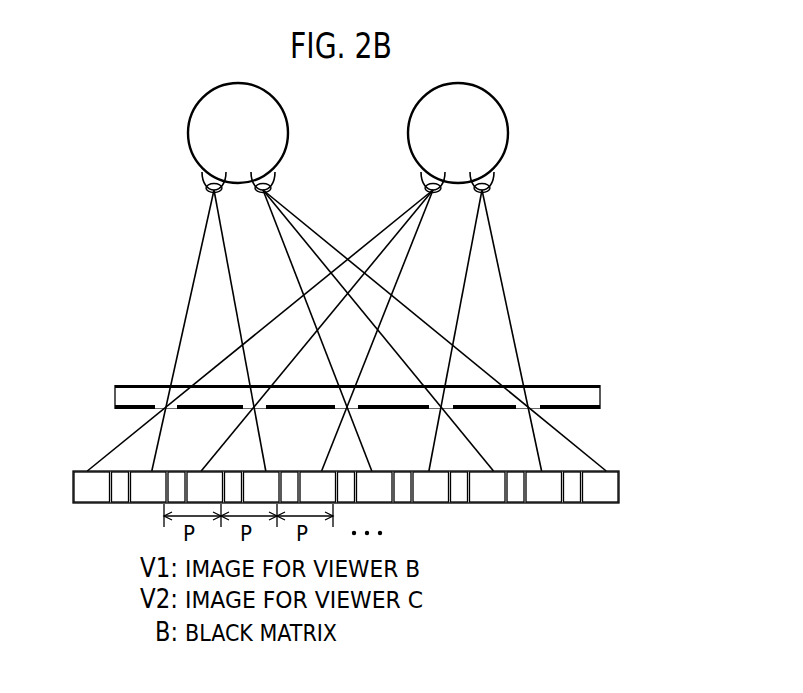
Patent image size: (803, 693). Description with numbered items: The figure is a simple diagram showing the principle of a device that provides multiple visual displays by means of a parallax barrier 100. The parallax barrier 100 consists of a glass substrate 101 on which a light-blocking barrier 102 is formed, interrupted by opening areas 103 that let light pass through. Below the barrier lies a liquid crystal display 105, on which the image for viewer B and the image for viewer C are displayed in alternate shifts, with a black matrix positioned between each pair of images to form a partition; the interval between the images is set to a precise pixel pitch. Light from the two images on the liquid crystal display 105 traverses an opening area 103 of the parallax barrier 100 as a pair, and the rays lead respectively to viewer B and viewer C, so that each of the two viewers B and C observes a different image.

The parallax barrier 100 is at (350, 393).
The glass substrate 101 is at (132, 392).
The barrier 102 is at (113, 410).
The opening area 103 is at (540, 388).
The liquid crystal display 105 is at (588, 503).
The viewer B is at (190, 140).
The viewer C is at (503, 137).